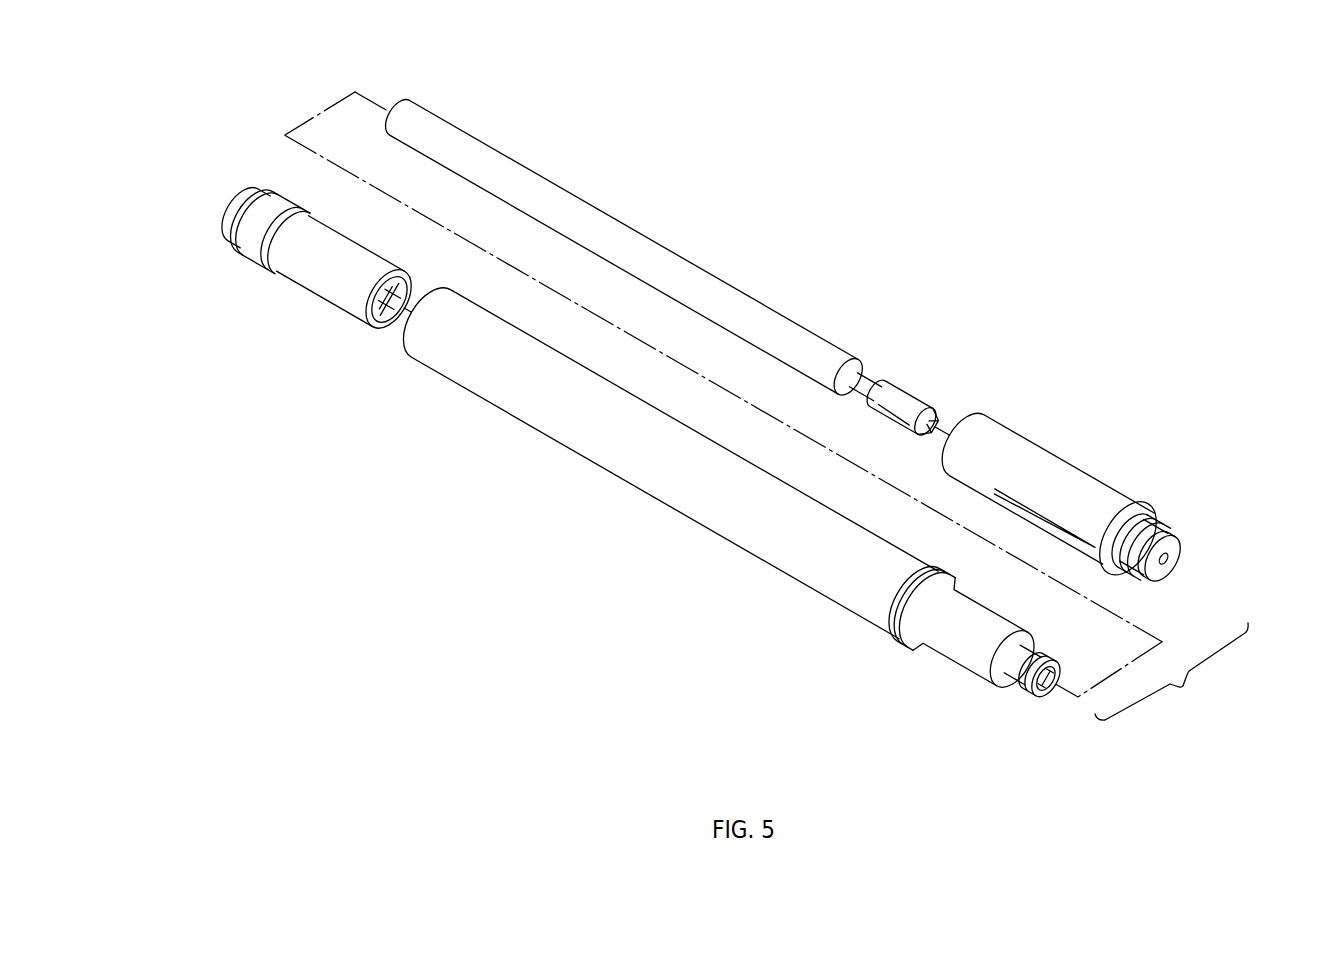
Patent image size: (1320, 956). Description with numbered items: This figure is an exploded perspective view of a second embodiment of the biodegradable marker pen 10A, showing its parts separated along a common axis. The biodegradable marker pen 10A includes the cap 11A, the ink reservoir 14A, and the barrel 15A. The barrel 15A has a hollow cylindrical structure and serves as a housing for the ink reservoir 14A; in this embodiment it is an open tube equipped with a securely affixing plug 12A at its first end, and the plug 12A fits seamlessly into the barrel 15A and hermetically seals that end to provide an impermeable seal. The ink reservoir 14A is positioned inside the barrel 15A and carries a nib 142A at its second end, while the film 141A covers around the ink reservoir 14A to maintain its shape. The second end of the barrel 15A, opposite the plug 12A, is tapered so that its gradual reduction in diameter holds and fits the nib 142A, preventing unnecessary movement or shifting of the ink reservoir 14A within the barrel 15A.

The biodegradable marker pen 10A is at (866, 186).
The ink reservoir 14A is at (874, 322).
The film 141A is at (619, 221).
The nib 142A is at (912, 400).
The cap 11A is at (1072, 473).
The plug 12A is at (233, 230).
The barrel 15A is at (675, 490).